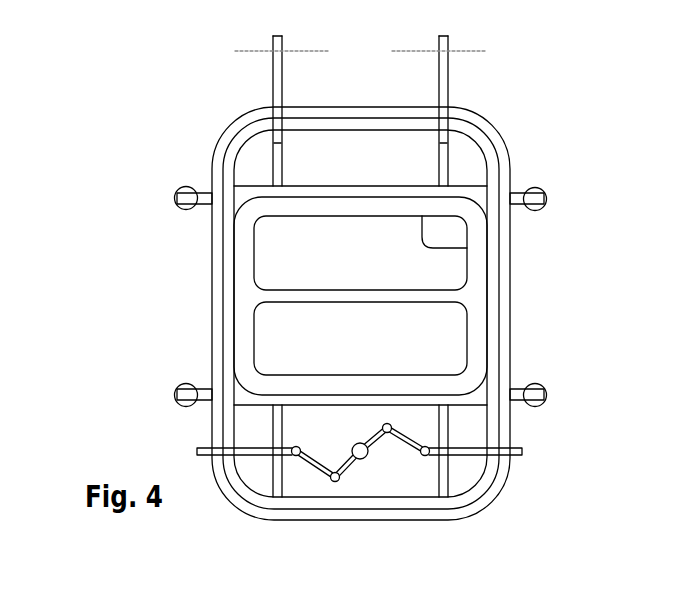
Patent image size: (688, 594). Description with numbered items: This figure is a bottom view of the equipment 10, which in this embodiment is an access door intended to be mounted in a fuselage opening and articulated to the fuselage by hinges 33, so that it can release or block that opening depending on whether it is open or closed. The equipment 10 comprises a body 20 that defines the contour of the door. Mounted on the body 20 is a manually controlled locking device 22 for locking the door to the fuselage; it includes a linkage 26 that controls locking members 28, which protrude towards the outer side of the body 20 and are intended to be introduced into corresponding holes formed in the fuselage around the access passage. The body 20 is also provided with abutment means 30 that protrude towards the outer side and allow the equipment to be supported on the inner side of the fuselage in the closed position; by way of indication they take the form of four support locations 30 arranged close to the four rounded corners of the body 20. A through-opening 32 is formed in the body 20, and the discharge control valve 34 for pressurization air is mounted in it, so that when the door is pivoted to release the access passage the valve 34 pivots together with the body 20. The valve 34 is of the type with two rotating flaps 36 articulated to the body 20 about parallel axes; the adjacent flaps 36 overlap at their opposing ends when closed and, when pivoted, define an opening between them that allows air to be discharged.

The equipment 10 is at (203, 103).
The body 20 is at (481, 122).
The locking device 22 is at (388, 459).
The linkage 26 is at (314, 468).
The locking members 28 is at (205, 449).
The abutment means 30 is at (186, 196).
The through-opening 32 is at (480, 242).
The hinges 33 is at (282, 79).
The discharge control valve 34 is at (289, 251).
The flaps 36 is at (433, 272).